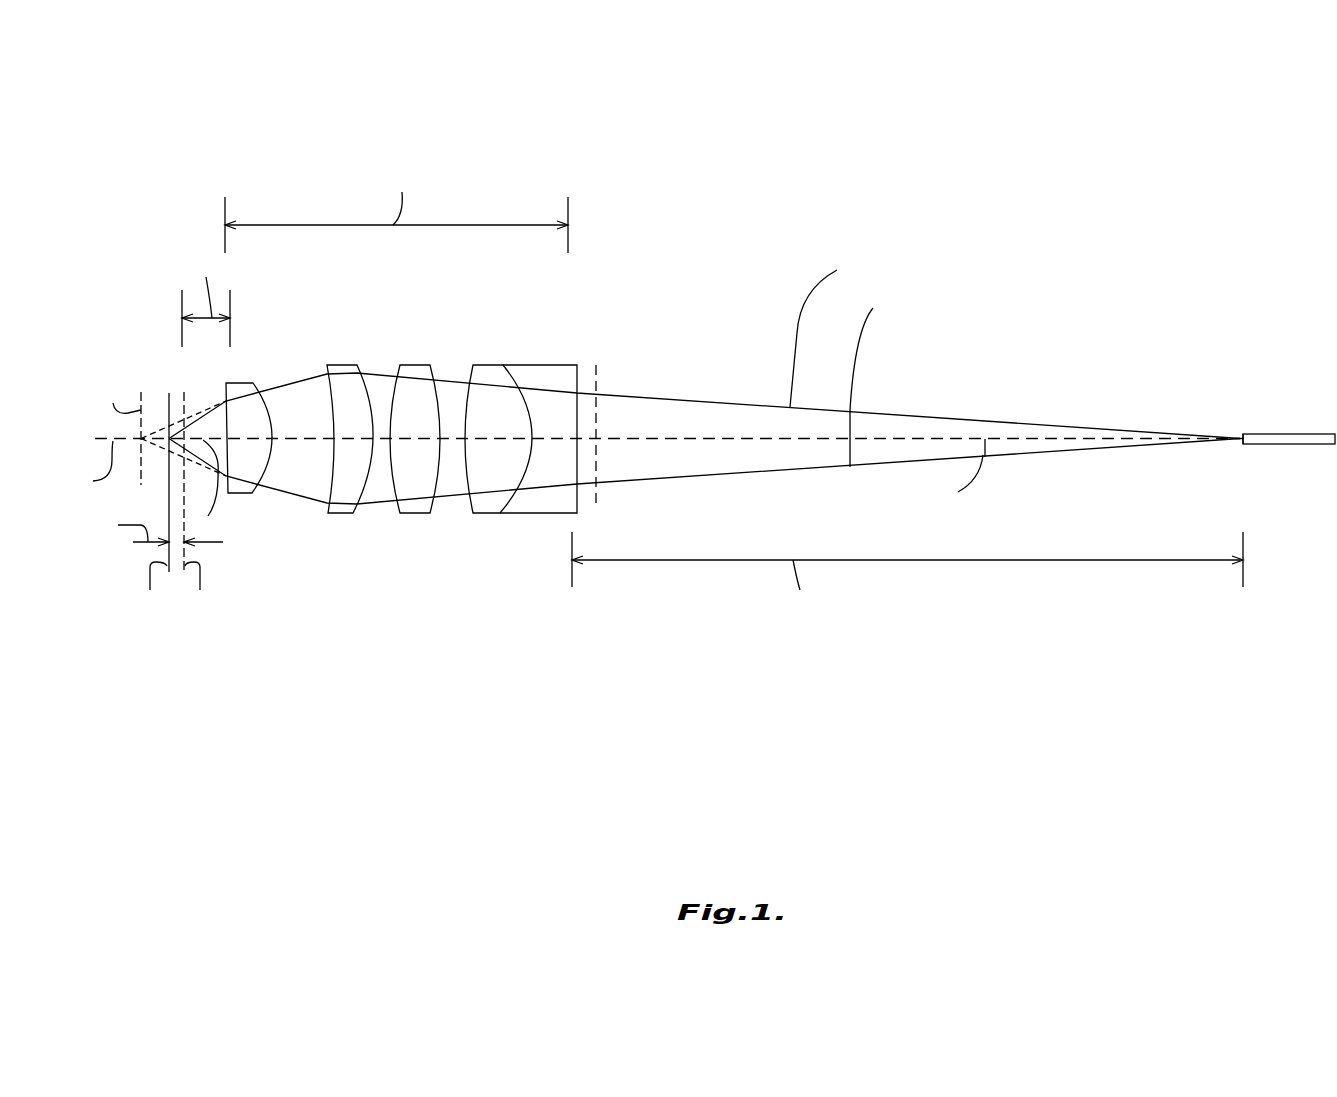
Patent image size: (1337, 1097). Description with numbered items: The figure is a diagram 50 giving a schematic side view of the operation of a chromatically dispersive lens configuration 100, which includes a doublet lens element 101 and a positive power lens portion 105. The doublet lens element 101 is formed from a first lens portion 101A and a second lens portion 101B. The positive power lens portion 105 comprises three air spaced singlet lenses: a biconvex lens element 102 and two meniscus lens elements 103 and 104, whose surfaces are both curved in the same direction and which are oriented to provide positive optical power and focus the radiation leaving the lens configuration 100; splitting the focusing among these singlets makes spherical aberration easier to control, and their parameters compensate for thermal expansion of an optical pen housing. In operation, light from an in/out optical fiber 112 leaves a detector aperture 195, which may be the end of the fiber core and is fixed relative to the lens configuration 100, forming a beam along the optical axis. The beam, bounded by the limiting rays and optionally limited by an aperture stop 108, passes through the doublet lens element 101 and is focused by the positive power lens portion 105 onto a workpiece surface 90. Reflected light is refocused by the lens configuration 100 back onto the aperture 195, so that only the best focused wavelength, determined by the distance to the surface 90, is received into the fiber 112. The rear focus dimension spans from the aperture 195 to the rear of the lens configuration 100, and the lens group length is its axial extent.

The diagram 50 is at (695, 430).
The workpiece surface 90 is at (169, 393).
The chromatically dispersive lens configuration 100 is at (401, 561).
The doublet lens element 101 is at (522, 519).
The first lens portion 101A is at (543, 513).
The second lens portion 101B is at (495, 513).
The biconvex lens element 102 is at (415, 496).
The meniscus lens element 103 is at (345, 513).
The meniscus lens element 104 is at (233, 493).
The positive power lens portion 105 is at (327, 519).
The aperture stop 108 is at (596, 365).
The in/out optical fiber 112 is at (1300, 432).
The detector aperture 195 is at (1242, 437).